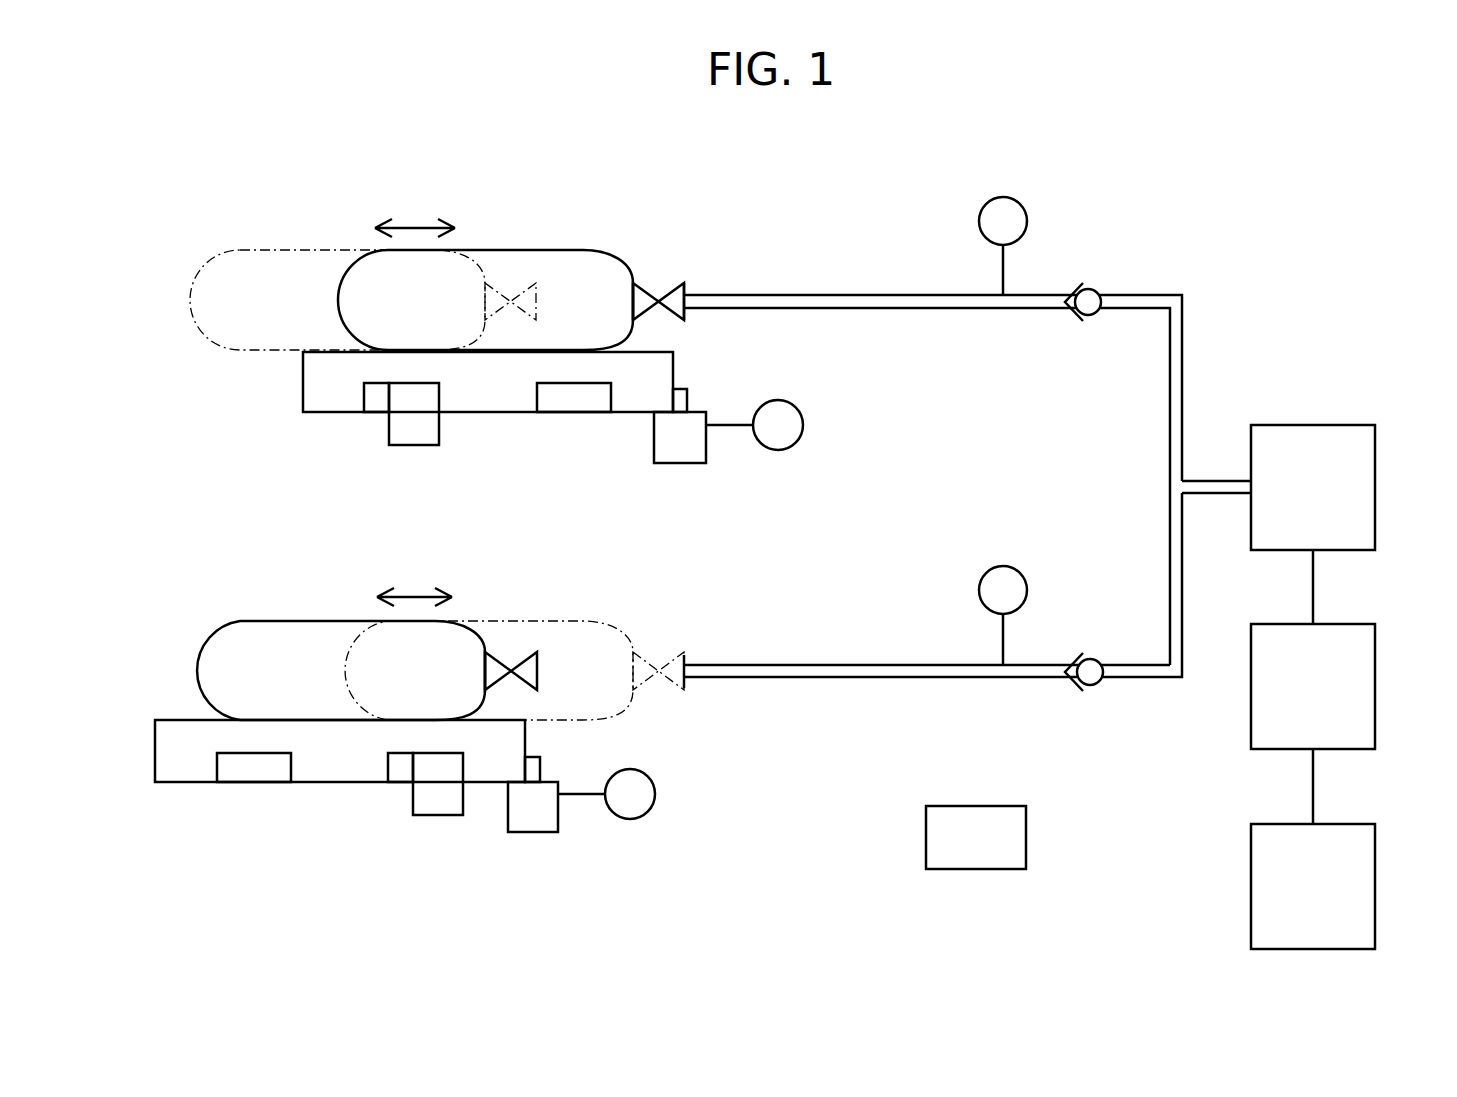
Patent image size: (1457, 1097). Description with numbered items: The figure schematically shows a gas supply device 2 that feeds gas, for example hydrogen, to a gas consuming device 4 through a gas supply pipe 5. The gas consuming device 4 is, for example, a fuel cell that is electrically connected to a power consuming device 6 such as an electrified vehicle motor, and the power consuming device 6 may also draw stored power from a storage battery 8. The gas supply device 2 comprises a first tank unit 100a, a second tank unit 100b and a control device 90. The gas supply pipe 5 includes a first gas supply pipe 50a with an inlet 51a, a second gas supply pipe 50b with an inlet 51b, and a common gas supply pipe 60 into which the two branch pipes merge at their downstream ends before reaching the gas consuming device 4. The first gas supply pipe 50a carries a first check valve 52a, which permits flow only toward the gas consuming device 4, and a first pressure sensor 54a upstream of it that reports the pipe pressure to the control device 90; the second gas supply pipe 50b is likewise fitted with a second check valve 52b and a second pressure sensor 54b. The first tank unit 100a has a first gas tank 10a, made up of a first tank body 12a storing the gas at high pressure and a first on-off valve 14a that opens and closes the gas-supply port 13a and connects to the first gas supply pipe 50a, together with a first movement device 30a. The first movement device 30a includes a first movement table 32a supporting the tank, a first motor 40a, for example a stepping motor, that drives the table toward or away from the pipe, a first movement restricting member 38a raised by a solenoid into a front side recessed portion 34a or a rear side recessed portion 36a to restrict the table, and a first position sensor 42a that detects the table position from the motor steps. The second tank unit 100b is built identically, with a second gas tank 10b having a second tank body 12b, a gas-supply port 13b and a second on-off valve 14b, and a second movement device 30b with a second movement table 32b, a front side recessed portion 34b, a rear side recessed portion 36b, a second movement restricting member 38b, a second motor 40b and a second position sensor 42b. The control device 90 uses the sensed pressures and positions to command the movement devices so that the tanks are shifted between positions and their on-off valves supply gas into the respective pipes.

The gas supply device 2 is at (743, 197).
The gas consuming device 4 is at (1375, 487).
The gas supply pipe 5 is at (1232, 303).
The power consuming device 6 is at (1375, 687).
The storage battery 8 is at (1375, 887).
The first gas tank 10a is at (540, 240).
The second gas tank 10b is at (287, 608).
The first tank body 12a is at (500, 250).
The second tank body 12b is at (325, 621).
The gas-supply port 13a is at (635, 283).
The gas-supply port 13b is at (487, 655).
The first on-off valve 14a is at (655, 297).
The second on-off valve 14b is at (518, 660).
The first movement device 30a is at (318, 425).
The second movement device 30b is at (165, 795).
The first movement table 32a is at (488, 414).
The second movement table 32b is at (340, 784).
The front side recessed portion 34a is at (573, 390).
The front side recessed portion 34b is at (400, 760).
The rear side recessed portion 36a is at (378, 392).
The rear side recessed portion 36b is at (255, 760).
The first movement restricting member 38a is at (414, 435).
The second movement restricting member 38b is at (440, 805).
The first motor 40a is at (680, 450).
The second motor 40b is at (532, 820).
The first position sensor 42a is at (803, 425).
The second position sensor 42b is at (655, 794).
The first gas supply pipe 50a is at (842, 294).
The second gas supply pipe 50b is at (842, 664).
The inlet 51a is at (680, 290).
The inlet 51b is at (678, 662).
The first check valve 52a is at (1100, 290).
The second check valve 52b is at (1097, 688).
The first pressure sensor 54a is at (1028, 222).
The second pressure sensor 54b is at (1028, 590).
The common gas supply pipe 60 is at (1215, 481).
The control device 90 is at (973, 870).
The first tank unit 100a is at (190, 375).
The second tank unit 100b is at (190, 892).